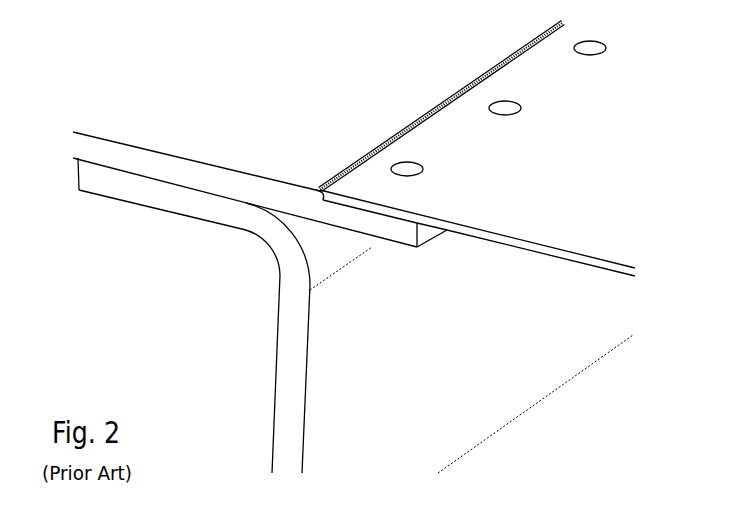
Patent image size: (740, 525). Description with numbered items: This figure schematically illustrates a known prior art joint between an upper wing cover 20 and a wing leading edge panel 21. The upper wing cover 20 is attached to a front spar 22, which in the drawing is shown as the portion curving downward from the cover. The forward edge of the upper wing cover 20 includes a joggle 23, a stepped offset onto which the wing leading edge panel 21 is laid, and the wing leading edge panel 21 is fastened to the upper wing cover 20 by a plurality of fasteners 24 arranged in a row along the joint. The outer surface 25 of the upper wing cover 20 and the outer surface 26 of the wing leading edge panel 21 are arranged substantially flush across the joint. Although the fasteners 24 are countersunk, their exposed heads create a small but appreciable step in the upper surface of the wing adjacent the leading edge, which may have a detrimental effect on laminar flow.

The upper wing cover 20 is at (198, 138).
The wing leading edge panel 21 is at (550, 237).
The front spar 22 is at (290, 342).
The joggle 23 is at (400, 235).
The fasteners 24 is at (423, 168).
The outer surface of the upper wing cover 25 is at (242, 77).
The outer surface of the wing leading edge panel 26 is at (559, 186).